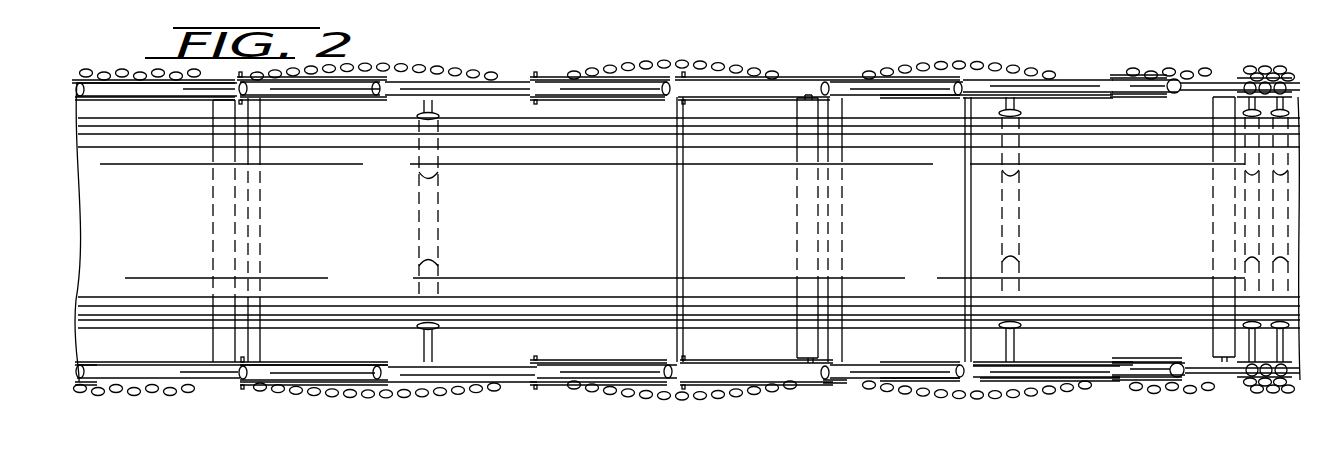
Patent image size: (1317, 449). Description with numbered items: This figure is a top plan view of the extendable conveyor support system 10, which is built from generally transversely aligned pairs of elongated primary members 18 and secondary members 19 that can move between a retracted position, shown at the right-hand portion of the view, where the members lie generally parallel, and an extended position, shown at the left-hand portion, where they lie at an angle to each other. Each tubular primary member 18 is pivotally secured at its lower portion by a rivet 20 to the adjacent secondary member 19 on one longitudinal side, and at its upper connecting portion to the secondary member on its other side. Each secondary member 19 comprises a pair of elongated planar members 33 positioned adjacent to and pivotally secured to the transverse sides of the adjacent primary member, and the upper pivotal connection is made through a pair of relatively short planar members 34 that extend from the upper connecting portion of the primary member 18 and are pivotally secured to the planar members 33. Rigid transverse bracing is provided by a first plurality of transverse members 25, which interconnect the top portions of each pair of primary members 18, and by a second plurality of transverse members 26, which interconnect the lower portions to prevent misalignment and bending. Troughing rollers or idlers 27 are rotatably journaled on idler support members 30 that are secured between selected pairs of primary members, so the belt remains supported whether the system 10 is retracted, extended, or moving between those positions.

The support system 10 is at (902, 398).
The primary elongated member 18 is at (1082, 78).
The secondary member 19 is at (893, 71).
The rivet 20 is at (823, 382).
The transverse member 25 is at (684, 104).
The transverse member 26 is at (263, 341).
The troughing roller or idler 27 is at (440, 338).
The idler support member 30 is at (425, 343).
The elongated planar member 33 is at (552, 79).
The short planar member 34 is at (683, 73).